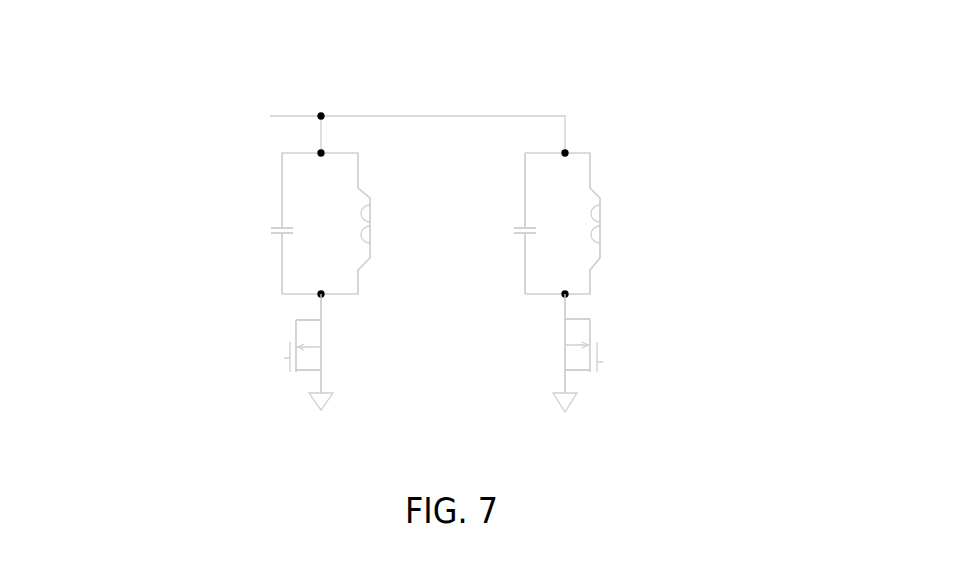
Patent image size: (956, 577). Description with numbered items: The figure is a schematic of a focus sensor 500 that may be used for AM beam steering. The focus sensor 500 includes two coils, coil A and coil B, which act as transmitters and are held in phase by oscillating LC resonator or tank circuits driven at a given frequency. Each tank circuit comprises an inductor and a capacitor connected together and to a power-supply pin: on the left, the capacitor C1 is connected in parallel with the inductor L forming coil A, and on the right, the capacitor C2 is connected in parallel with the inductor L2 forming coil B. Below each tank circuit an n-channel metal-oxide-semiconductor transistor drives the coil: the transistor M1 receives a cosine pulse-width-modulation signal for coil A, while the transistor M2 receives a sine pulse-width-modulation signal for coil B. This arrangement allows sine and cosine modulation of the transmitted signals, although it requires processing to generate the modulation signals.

The focus sensor 500 is at (437, 223).
The capacitor C1 is at (292, 223).
The capacitor C2 is at (534, 223).
The inductor L is at (401, 223).
The coil B inductor L2 is at (632, 223).
The NMOS transistor M1 is at (340, 343).
The NMOS transistor M2 is at (545, 343).